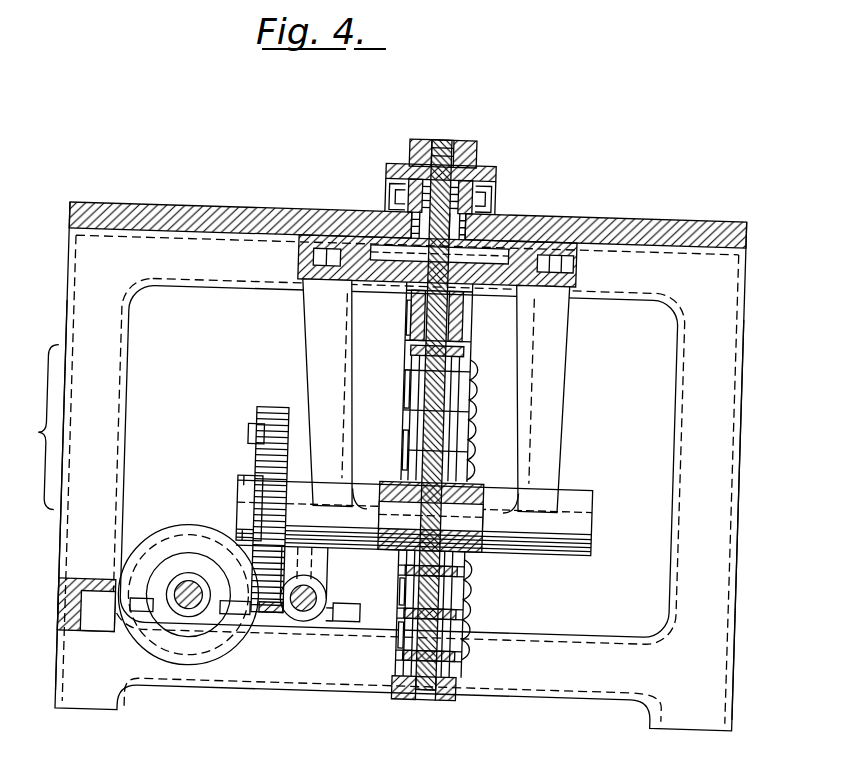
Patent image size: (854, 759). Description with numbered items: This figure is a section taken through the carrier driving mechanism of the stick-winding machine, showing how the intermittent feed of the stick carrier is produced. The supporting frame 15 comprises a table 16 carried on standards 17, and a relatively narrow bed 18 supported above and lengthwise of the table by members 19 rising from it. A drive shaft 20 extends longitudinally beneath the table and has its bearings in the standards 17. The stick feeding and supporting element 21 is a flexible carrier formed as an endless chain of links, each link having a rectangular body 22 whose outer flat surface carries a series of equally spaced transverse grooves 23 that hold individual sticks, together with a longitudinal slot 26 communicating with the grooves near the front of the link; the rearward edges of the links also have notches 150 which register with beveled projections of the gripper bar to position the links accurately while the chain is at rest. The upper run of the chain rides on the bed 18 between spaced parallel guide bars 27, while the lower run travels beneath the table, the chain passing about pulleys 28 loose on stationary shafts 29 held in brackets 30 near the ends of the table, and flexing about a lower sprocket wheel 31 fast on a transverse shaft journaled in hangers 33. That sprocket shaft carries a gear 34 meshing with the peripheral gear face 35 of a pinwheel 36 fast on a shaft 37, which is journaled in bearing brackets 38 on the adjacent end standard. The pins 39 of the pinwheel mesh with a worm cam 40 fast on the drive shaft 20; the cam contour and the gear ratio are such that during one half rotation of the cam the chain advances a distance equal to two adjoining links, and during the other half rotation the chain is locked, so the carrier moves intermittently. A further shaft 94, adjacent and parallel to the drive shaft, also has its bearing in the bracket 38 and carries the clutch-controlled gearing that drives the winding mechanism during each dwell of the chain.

The supporting frame 15 is at (34, 426).
The table 16 is at (122, 201).
The standards 17 is at (399, 510).
The bed 18 is at (496, 169).
The members 19 is at (390, 186).
The drive shaft 20 is at (200, 591).
The stick feeding and supporting element 21 is at (419, 130).
The rectangular body 22 is at (436, 139).
The transverse grooves 23 is at (463, 138).
The slot 26 is at (411, 321).
The guide bars 27 is at (419, 168).
The pulleys 28 is at (425, 189).
The stationary shafts 29 is at (495, 247).
The brackets 30 is at (401, 235).
The lower sprocket wheel 31 is at (476, 573).
The hangers 33 is at (433, 397).
The gear 34 is at (270, 452).
The peripheral gear face 35 is at (290, 604).
The pinwheel 36 is at (290, 396).
The shaft 37 is at (608, 505).
The bearing brackets 38 is at (336, 560).
The pins 39 is at (262, 419).
The worm cam 40 is at (206, 521).
The shaft 94 is at (317, 593).
The notches 150 is at (467, 375).